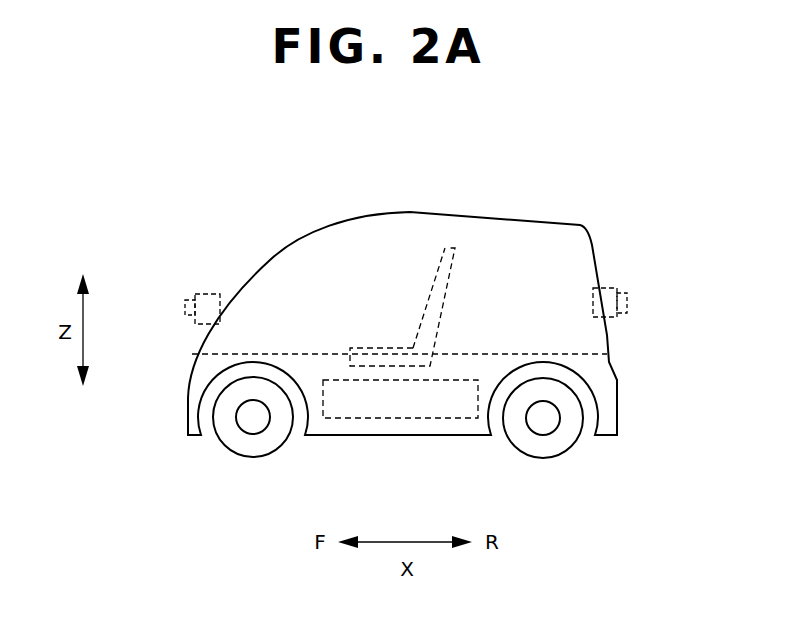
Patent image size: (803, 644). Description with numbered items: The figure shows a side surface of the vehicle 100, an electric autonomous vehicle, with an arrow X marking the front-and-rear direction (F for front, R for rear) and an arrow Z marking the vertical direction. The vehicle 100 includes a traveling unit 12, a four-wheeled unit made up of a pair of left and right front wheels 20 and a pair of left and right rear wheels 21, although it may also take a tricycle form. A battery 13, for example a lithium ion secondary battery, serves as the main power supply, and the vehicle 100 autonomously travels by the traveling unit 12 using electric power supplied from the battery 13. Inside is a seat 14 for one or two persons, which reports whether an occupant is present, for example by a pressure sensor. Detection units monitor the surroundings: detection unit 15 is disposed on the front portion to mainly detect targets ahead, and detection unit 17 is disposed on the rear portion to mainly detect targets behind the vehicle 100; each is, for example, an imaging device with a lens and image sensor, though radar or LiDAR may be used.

The vehicle 100 is at (420, 163).
The traveling unit 12 is at (598, 362).
The battery 13 is at (392, 420).
The seat 14 is at (447, 247).
The detection unit 15 is at (207, 294).
The detection unit 17 is at (603, 287).
The front wheels 20 is at (268, 458).
The rear wheels 21 is at (567, 457).